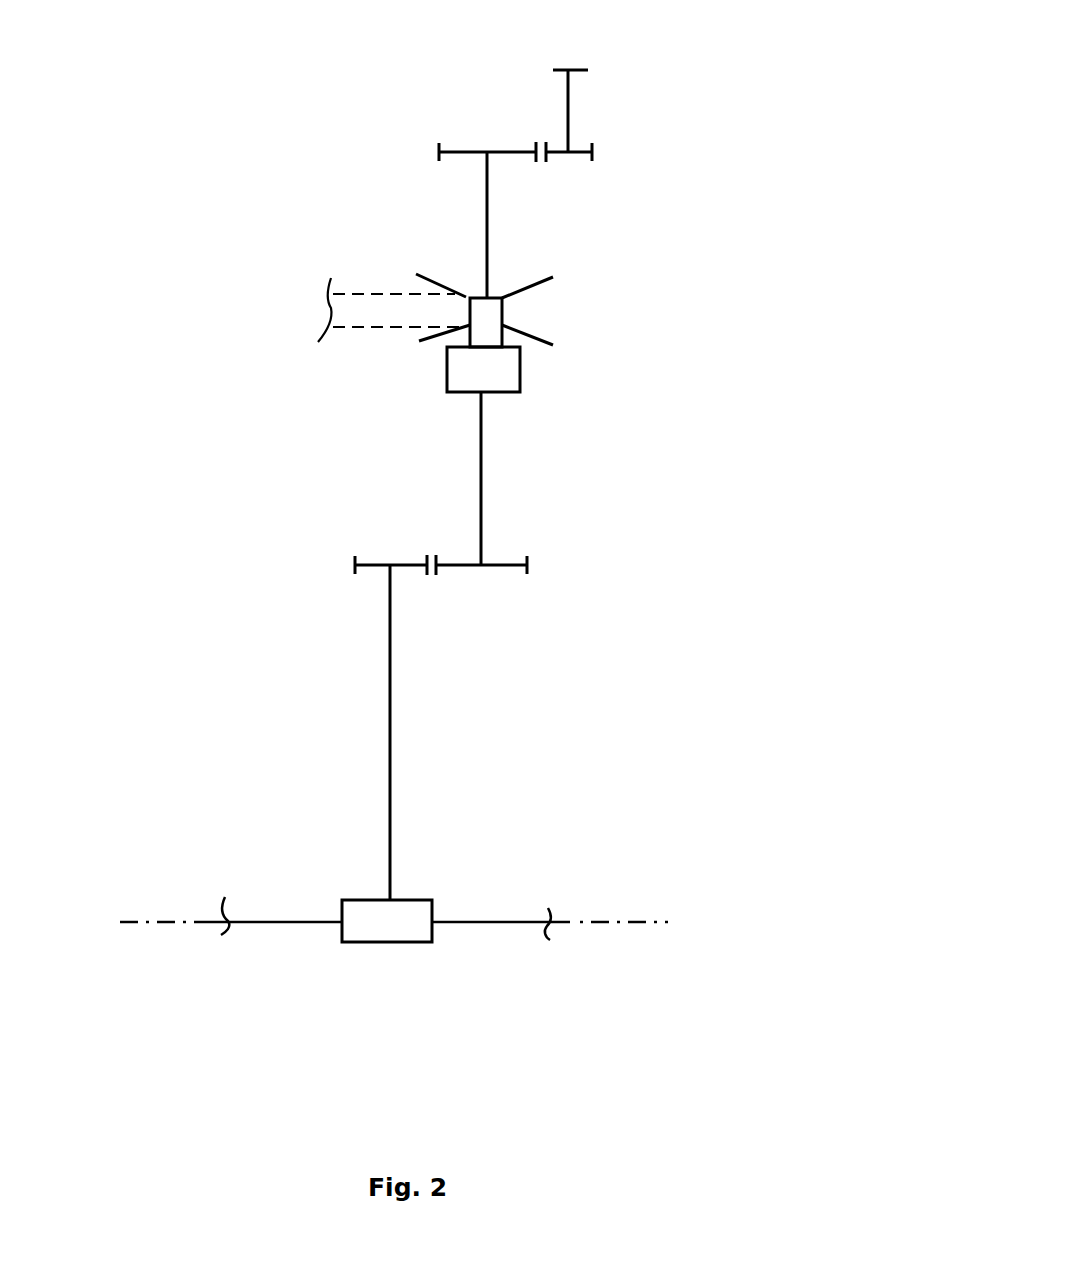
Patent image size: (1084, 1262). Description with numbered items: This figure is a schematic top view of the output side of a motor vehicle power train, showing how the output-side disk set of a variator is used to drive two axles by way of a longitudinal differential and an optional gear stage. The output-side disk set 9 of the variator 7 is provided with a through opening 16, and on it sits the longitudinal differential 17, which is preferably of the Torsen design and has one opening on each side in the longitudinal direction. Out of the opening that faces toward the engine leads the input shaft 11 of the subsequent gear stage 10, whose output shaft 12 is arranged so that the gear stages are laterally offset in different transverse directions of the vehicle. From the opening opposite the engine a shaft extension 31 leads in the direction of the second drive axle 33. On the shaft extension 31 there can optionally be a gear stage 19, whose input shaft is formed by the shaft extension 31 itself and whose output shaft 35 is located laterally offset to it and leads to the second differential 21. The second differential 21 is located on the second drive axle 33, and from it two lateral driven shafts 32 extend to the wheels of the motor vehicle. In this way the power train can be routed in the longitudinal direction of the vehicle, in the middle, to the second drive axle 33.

The variator 7 is at (356, 324).
The output-side disk set 9 is at (526, 330).
The subsequent gear stage 10 is at (520, 140).
The input shaft 11 is at (486, 228).
The output shaft 12 is at (570, 108).
The through opening 16 is at (490, 298).
The longitudinal differential 17 is at (505, 377).
The gear stage 19 is at (434, 580).
The second differential 21 is at (410, 900).
The shaft extension 31 is at (481, 452).
The lateral driven shafts 32 is at (516, 928).
The second drive axle 33 is at (170, 915).
The output shaft 35 is at (389, 658).